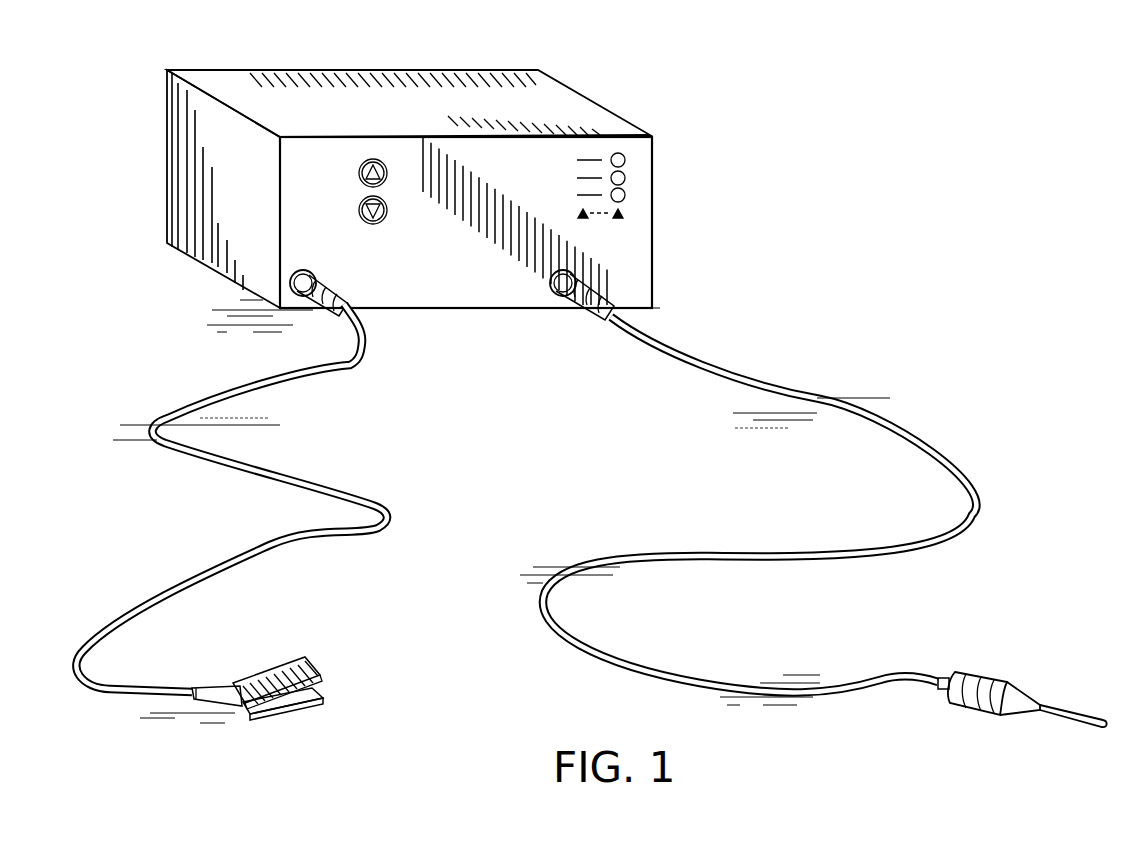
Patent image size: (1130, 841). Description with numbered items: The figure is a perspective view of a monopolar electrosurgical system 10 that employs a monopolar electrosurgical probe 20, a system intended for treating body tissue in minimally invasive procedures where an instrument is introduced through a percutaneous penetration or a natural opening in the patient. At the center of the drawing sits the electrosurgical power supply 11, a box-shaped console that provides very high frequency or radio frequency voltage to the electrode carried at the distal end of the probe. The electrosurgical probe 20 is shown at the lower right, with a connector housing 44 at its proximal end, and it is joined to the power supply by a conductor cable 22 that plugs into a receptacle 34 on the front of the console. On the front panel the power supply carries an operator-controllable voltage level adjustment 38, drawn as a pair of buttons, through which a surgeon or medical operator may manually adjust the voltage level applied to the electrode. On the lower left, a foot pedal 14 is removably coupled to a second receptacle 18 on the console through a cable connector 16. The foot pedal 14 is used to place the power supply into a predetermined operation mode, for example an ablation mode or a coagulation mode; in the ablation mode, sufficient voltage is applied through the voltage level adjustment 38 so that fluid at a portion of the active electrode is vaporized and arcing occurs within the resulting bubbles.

The monopolar electrosurgical system 10 is at (748, 233).
The electrosurgical power supply 11 is at (432, 92).
The foot pedal 14 is at (312, 663).
The cable connector 16 is at (355, 483).
The receptacle 18 is at (323, 279).
The electrosurgical probe 20 is at (1084, 693).
The conductor cable 22 is at (918, 437).
The receptacle 34 is at (586, 314).
The voltage level adjustment 38 is at (357, 210).
The connector housing 44 is at (985, 688).